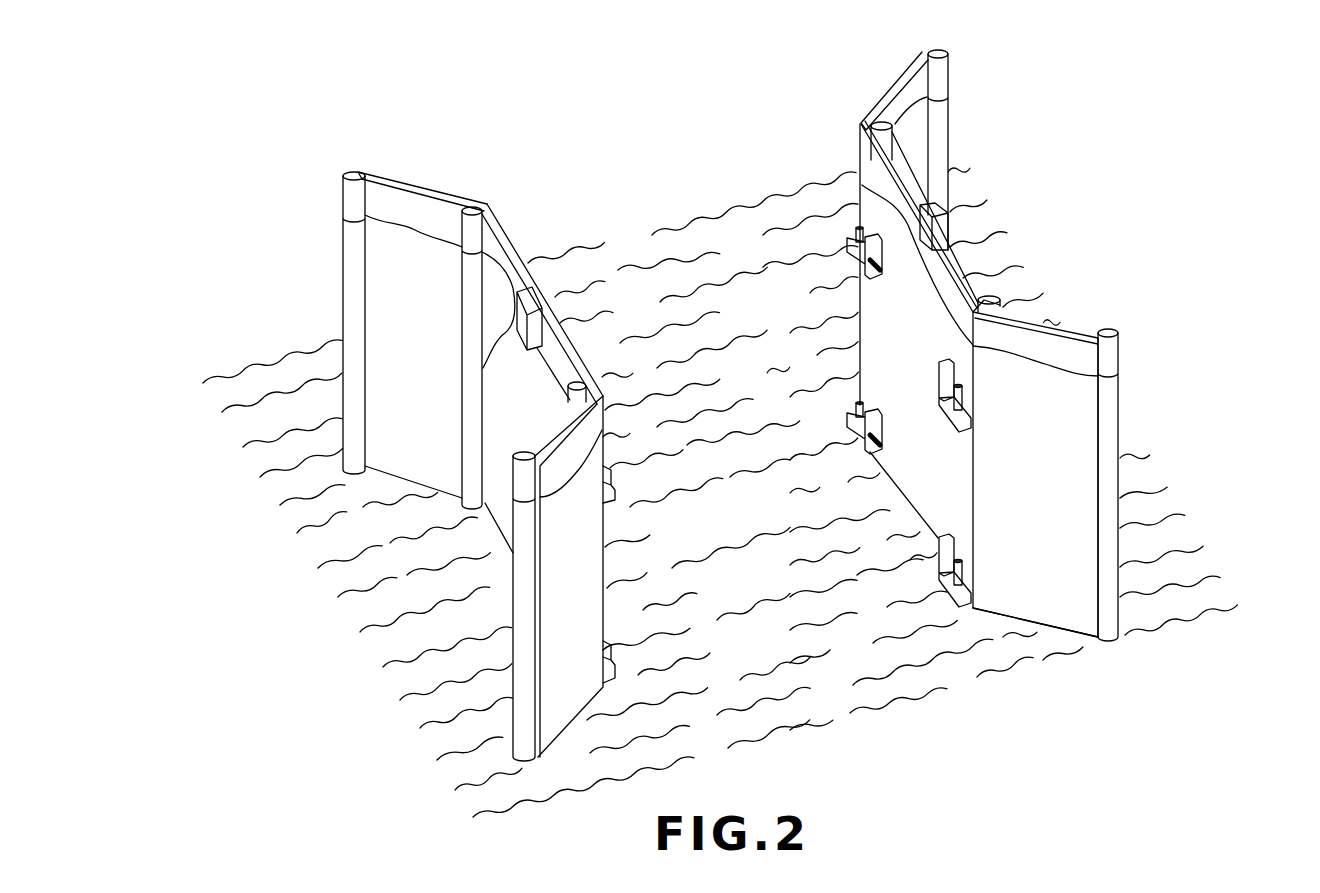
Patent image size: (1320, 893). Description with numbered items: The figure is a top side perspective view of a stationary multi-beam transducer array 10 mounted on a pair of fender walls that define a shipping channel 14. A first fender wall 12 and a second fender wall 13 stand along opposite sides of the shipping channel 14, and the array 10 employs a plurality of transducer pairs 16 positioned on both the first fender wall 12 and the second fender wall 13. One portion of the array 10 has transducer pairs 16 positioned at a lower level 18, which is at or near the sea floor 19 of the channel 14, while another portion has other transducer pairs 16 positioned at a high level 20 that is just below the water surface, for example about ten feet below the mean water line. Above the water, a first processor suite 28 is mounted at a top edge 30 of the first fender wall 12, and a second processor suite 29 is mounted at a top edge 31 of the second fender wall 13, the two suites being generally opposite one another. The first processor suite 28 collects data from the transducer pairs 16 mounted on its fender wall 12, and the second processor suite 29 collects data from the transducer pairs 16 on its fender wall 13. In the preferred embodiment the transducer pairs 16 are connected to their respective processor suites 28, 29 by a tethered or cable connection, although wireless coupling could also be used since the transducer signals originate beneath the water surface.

The stationary multi-beam transducer array 10 is at (809, 424).
The first fender wall 12 is at (1022, 478).
The second fender wall 13 is at (558, 578).
The shipping channel 14 is at (640, 158).
The transducer pairs 16 is at (938, 535).
The lower level 18 is at (1000, 597).
The sea floor 19 is at (840, 668).
The high level 20 is at (1066, 397).
The first processor suite 28 is at (948, 200).
The second processor suite 29 is at (483, 368).
The top edge 30 is at (866, 122).
The top edge 31 is at (507, 237).